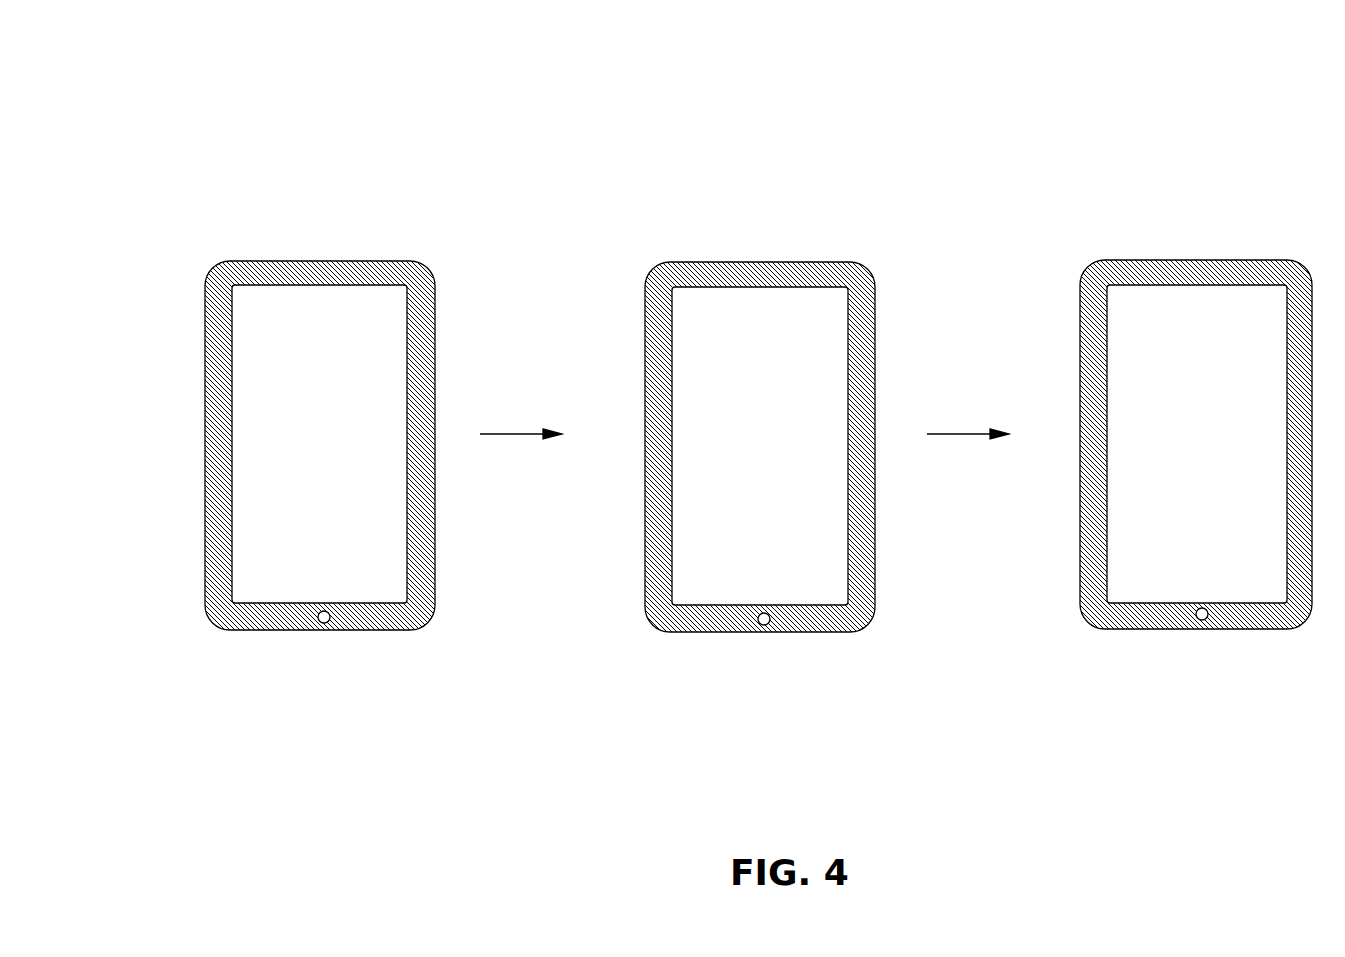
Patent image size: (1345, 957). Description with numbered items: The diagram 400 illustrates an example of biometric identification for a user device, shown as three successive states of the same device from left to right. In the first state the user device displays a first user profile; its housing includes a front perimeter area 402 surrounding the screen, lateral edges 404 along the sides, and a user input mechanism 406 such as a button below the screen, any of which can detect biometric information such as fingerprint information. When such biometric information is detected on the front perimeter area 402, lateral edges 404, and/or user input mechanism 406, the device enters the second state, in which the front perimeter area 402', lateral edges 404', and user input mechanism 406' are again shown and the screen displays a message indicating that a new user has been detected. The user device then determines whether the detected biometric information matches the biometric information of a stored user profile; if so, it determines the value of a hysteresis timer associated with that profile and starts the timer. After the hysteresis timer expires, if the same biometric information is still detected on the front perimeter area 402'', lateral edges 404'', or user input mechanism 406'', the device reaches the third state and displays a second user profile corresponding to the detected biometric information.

The diagram 400 is at (178, 50).
The front perimeter area 402 is at (323, 438).
The lateral edges 404 is at (288, 444).
The user input mechanisms 406 is at (338, 639).
The front perimeter area 402' is at (768, 439).
The lateral edges 404' is at (723, 446).
The user input mechanisms 406' is at (778, 640).
The front perimeter area 402'' is at (1205, 437).
The lateral edges 404'' is at (1158, 444).
The user input mechanisms 406'' is at (1216, 636).